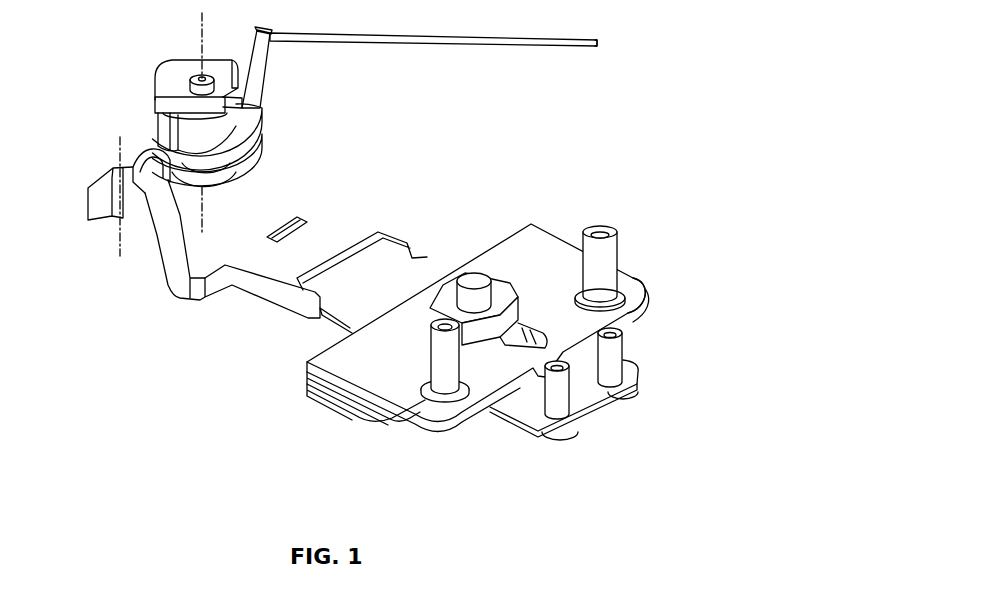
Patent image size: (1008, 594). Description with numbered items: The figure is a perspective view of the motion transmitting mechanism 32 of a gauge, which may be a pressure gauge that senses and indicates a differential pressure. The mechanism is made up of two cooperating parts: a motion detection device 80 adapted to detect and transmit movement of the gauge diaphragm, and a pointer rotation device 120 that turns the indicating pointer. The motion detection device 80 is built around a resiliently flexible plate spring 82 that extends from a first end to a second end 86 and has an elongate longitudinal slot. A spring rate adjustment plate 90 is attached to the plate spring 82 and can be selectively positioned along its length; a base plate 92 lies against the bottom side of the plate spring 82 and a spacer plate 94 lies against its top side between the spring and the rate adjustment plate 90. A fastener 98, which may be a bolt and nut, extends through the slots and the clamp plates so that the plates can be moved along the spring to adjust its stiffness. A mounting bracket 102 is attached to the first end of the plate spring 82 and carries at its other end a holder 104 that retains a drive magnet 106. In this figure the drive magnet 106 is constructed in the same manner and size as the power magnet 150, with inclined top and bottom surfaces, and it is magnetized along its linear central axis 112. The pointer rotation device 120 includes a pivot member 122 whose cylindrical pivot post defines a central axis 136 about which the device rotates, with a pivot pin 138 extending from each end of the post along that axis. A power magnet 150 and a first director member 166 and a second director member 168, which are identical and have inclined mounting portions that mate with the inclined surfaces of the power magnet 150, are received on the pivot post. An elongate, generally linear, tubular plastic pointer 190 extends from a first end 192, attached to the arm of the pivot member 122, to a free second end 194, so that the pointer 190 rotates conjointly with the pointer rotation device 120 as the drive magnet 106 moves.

The motion transmitting mechanism 32 is at (490, 190).
The motion detection device 80 is at (450, 240).
The plate spring 82 is at (335, 327).
The second end 86 is at (592, 397).
The spring rate adjustment plate 90 is at (618, 312).
The base plate 92 is at (360, 407).
The spacer plate 94 is at (333, 383).
The fastener 98 is at (474, 278).
The mounting bracket 102 is at (280, 297).
The holder 104 is at (88, 222).
The drive magnet 106 is at (88, 200).
The central axis 112 is at (118, 258).
The pointer rotation device 120 is at (155, 40).
The pivot member 122 is at (193, 125).
The central axis 136 is at (206, 20).
The pivot pin 138 is at (172, 79).
The power magnet 150 is at (200, 178).
The first director member 166 is at (268, 126).
The second director member 168 is at (268, 153).
The pointer 190 is at (468, 39).
The first end 192 is at (290, 30).
The second end 194 is at (599, 46).